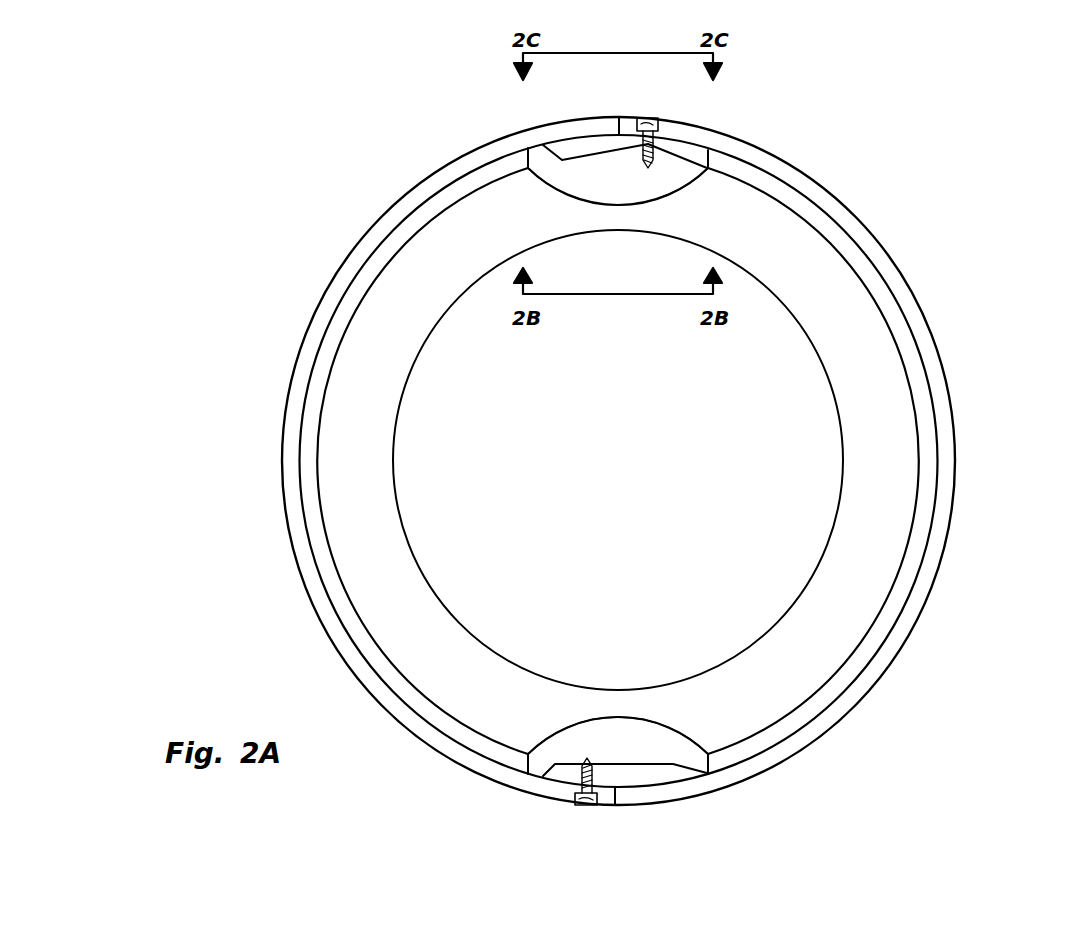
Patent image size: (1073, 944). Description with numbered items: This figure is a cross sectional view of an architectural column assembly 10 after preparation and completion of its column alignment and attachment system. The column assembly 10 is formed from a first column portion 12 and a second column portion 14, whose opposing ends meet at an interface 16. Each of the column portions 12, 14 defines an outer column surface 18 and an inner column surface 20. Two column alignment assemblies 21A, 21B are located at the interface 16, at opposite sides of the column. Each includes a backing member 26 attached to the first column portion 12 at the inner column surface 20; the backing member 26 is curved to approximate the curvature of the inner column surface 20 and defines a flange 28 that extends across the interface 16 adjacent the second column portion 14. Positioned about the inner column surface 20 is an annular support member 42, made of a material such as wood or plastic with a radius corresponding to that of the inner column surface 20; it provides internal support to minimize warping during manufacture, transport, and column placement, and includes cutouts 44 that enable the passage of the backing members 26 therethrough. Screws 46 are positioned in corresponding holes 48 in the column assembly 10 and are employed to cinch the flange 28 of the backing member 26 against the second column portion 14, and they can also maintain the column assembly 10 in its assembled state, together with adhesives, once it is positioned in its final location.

The column assembly 10 is at (913, 222).
The first column portion 12 is at (362, 238).
The second column portion 14 is at (946, 420).
The interface 16 is at (620, 123).
The outer column surface 18 is at (281, 452).
The inner column surface 20 is at (735, 178).
The column alignment assembly 21A is at (558, 106).
The column alignment assembly 21B is at (706, 812).
The backing member 26 is at (583, 163).
The flange 28 is at (670, 152).
The support member 42 is at (843, 462).
The cutouts 44 is at (652, 200).
The screws 46 is at (657, 142).
The holes 48 is at (648, 145).